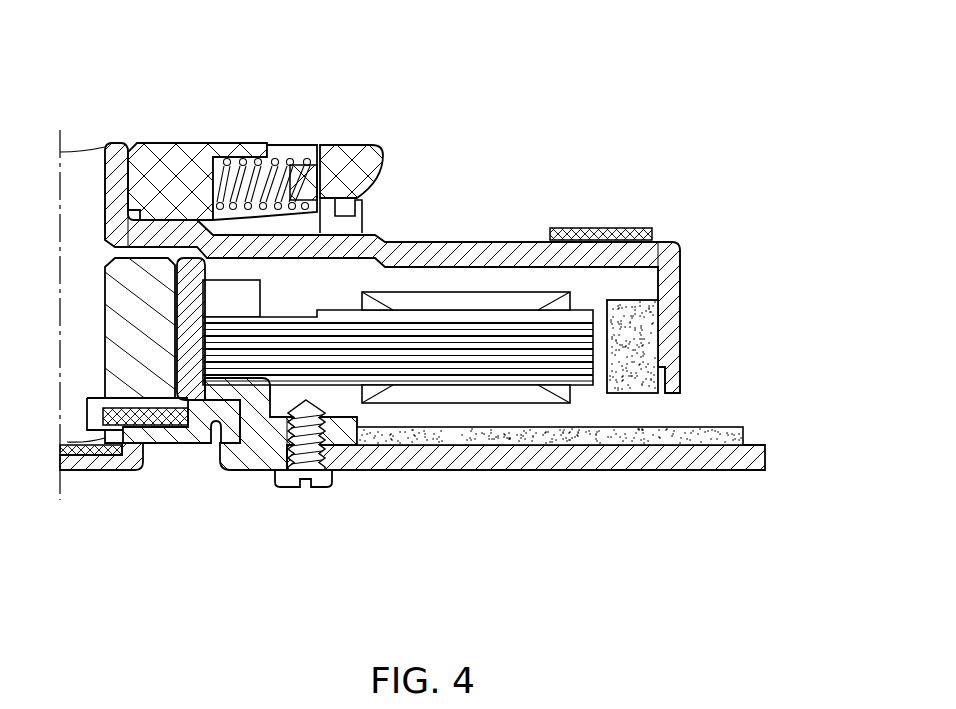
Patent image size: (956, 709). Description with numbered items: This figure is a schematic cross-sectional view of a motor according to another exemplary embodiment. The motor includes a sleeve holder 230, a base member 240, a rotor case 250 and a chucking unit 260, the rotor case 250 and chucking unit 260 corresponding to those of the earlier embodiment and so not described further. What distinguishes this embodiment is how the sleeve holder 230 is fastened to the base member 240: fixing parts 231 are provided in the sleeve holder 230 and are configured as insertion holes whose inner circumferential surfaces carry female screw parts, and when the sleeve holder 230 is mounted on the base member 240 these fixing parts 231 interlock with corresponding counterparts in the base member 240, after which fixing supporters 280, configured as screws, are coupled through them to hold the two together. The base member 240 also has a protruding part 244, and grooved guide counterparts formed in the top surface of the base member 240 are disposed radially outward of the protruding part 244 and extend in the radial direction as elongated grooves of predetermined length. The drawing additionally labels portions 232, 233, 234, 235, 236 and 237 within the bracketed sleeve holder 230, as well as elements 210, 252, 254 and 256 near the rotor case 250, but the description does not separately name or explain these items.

The lens 210 is at (90, 147).
The sleeve holder 230 is at (280, 432).
The fixing parts 231 is at (315, 450).
The holder body 232 is at (145, 350).
The holder bracket 233 is at (255, 400).
The holder boss 234 is at (402, 496).
The holder arm 235 is at (248, 378).
The holder inner wall 236 is at (177, 315).
The holder flange 237 is at (287, 235).
The base member 240 is at (636, 470).
The protruding part 244 is at (313, 145).
The rotor case 250 is at (378, 235).
The magnet 252 is at (647, 352).
The housing side wall 254 is at (117, 143).
The housing rear wall 256 is at (680, 290).
The chucking unit 260 is at (183, 143).
The fixing supporters 280 is at (330, 402).